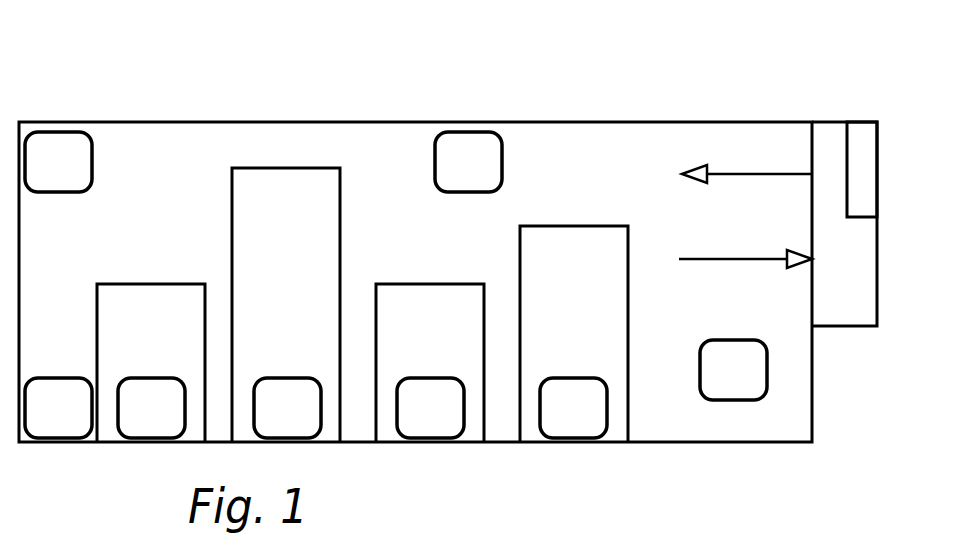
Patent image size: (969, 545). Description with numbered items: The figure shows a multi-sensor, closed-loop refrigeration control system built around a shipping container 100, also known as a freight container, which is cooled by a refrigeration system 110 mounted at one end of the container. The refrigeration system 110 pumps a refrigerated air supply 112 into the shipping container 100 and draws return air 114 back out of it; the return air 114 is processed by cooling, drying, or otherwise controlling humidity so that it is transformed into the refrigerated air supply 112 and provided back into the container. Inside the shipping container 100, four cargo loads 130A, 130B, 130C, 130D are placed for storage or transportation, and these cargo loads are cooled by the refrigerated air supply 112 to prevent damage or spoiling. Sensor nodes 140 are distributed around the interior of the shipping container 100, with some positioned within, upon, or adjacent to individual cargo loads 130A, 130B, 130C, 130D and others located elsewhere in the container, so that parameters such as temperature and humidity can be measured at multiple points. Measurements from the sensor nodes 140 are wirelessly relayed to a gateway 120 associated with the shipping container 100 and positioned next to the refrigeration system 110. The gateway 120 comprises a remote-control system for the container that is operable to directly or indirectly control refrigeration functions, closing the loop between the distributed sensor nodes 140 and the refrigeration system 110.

The shipping container 100 is at (97, 121).
The refrigeration system 110 is at (857, 334).
The refrigerated air supply 112 is at (747, 162).
The return air 114 is at (745, 247).
The gateway 120 is at (867, 121).
The cargo load 130A is at (151, 363).
The cargo load 130B is at (286, 305).
The cargo load 130C is at (430, 363).
The cargo load 130D is at (574, 334).
The sensor node 140 is at (396, 285).